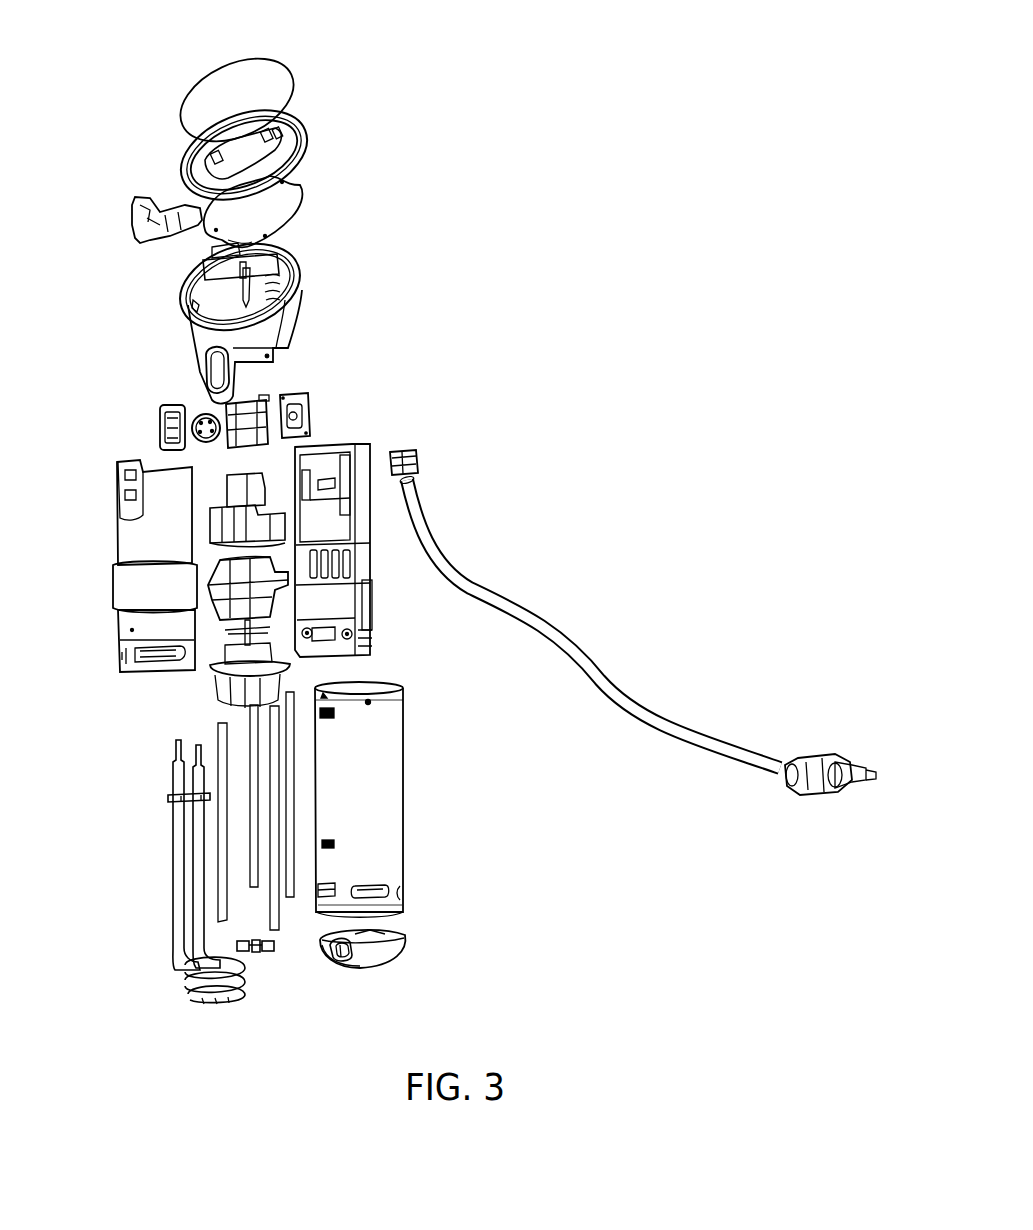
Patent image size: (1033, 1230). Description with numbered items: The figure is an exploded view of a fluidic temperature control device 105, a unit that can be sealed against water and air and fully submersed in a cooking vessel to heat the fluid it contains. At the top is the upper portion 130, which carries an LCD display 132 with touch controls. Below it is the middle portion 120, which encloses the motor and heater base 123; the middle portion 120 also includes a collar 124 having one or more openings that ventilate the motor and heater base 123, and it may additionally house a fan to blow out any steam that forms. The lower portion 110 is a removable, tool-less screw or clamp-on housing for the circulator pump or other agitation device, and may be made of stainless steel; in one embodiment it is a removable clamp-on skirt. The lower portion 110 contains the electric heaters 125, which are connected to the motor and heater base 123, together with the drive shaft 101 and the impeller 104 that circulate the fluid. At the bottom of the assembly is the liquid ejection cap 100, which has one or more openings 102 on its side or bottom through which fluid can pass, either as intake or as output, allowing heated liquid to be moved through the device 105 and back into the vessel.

The fluidic temperature control device 105 is at (151, 52).
The LCD display 132 is at (275, 73).
The upper portion 130 is at (286, 303).
The middle portion 120 is at (362, 447).
The collar 124 is at (113, 587).
The motor and heater base 123 is at (213, 606).
The lower portion 110 is at (398, 800).
The liquid ejection cap 100 is at (392, 953).
The drive shaft 101 is at (253, 887).
The openings 102 is at (340, 962).
The impeller 104 is at (258, 954).
The heaters 125 is at (214, 998).